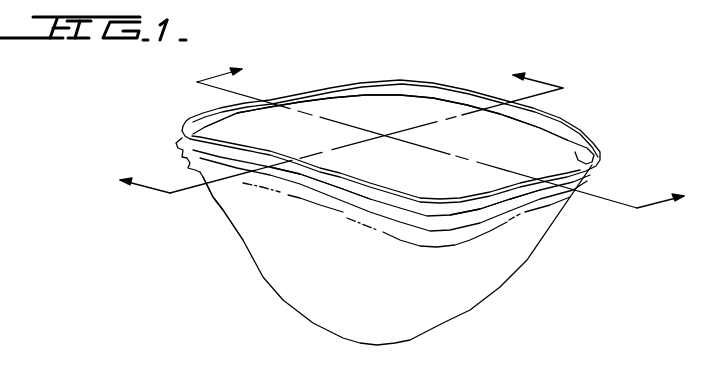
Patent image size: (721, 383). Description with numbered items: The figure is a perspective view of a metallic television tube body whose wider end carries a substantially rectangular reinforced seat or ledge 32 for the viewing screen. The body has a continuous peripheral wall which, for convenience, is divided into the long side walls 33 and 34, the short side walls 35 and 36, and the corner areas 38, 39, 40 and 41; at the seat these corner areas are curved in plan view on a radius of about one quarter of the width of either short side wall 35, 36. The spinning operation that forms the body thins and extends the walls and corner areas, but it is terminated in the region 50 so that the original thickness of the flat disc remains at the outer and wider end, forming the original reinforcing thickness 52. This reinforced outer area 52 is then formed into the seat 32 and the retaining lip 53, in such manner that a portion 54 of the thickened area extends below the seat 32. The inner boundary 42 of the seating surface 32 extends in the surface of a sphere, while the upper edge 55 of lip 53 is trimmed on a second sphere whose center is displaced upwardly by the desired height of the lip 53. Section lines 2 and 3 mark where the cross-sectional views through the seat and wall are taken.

The section line 2- 2 is at (446, 134).
The section line 3- 3 is at (333, 128).
The seat 32 is at (592, 157).
The long side wall 33 is at (486, 144).
The long side wall 34 is at (320, 205).
The short side wall 35 is at (523, 250).
The short side wall 36 is at (289, 136).
The corner area 38 is at (384, 113).
The corner area 39 is at (228, 213).
The corner area 40 is at (437, 290).
The corner area 41 is at (590, 153).
The inner boundary 42 is at (541, 128).
The region 50 is at (343, 200).
The original reinforcing thickness 52 is at (177, 155).
The retaining lip 53 is at (598, 165).
The portion 54 is at (585, 184).
The upper edge 55 is at (603, 153).